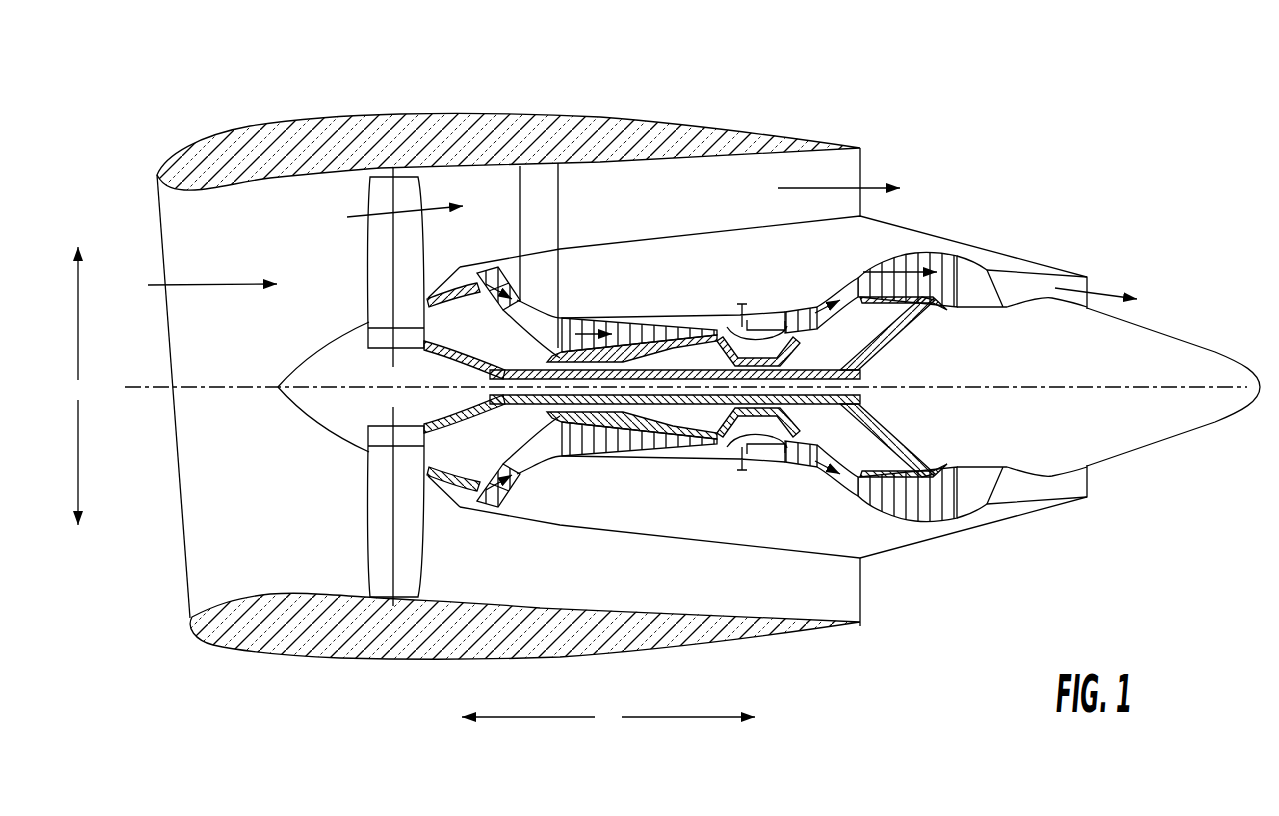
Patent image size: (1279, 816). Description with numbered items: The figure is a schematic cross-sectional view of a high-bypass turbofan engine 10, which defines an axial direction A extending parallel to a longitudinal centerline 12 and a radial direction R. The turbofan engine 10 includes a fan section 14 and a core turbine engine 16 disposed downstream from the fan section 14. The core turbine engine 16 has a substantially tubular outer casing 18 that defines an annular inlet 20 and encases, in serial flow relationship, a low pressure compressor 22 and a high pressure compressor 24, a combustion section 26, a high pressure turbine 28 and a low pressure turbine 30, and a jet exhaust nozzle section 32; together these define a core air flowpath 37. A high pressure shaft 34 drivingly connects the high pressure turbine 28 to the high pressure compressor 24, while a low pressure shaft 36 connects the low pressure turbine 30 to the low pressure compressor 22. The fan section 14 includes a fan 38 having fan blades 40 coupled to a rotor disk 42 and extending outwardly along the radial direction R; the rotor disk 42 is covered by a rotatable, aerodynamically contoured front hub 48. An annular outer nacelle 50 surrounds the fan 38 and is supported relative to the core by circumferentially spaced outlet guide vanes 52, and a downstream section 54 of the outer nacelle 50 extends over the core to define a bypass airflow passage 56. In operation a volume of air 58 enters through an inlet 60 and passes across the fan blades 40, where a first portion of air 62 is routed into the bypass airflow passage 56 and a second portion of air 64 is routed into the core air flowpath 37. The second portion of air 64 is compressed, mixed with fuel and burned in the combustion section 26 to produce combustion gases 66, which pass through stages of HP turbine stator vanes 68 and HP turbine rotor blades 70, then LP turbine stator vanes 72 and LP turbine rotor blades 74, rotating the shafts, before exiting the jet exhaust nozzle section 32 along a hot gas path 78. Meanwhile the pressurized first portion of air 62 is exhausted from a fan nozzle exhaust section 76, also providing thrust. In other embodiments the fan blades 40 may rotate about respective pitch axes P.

The turbofan engine 10 is at (1003, 128).
The longitudinal centerline 12 is at (1027, 383).
The fan section 14 is at (328, 203).
The core turbine engine 16 is at (679, 272).
The outer casing 18 is at (717, 548).
The annular inlet 20 is at (480, 503).
The low pressure compressor 22 is at (517, 458).
The high pressure compressor 24 is at (588, 437).
The combustion section 26 is at (762, 450).
The high pressure turbine 28 is at (887, 450).
The low pressure turbine 30 is at (943, 518).
The jet exhaust nozzle section 32 is at (1003, 497).
The high pressure shaft 34 is at (762, 357).
The low pressure shaft 36 is at (885, 352).
The core air flowpath 37 is at (551, 442).
The fan 38 is at (333, 437).
The fan blades 40 is at (365, 535).
The rotor disk 42 is at (388, 338).
The front hub 48 is at (183, 453).
The outer nacelle 50 is at (415, 658).
The outlet guide vanes 52 is at (560, 197).
The downstream section of the nacelle 54 is at (805, 140).
The bypass airflow passage 56 is at (706, 203).
The volume of air 58 is at (208, 285).
The inlet 60 is at (190, 605).
The first portion of air 62 is at (371, 230).
The second portion of air 64 is at (441, 278).
The combustion gases 66 is at (900, 273).
The HP turbine stator vanes 68 is at (777, 457).
The HP turbine rotor blades 70 is at (873, 417).
The LP turbine stator vanes 72 is at (867, 497).
The LP turbine rotor blades 74 is at (868, 507).
The fan nozzle exhaust section 76 is at (860, 170).
The hot gas path 78 is at (840, 290).
The pitch axes P is at (395, 195).
The radial direction R is at (78, 386).
The axial direction A is at (608, 718).